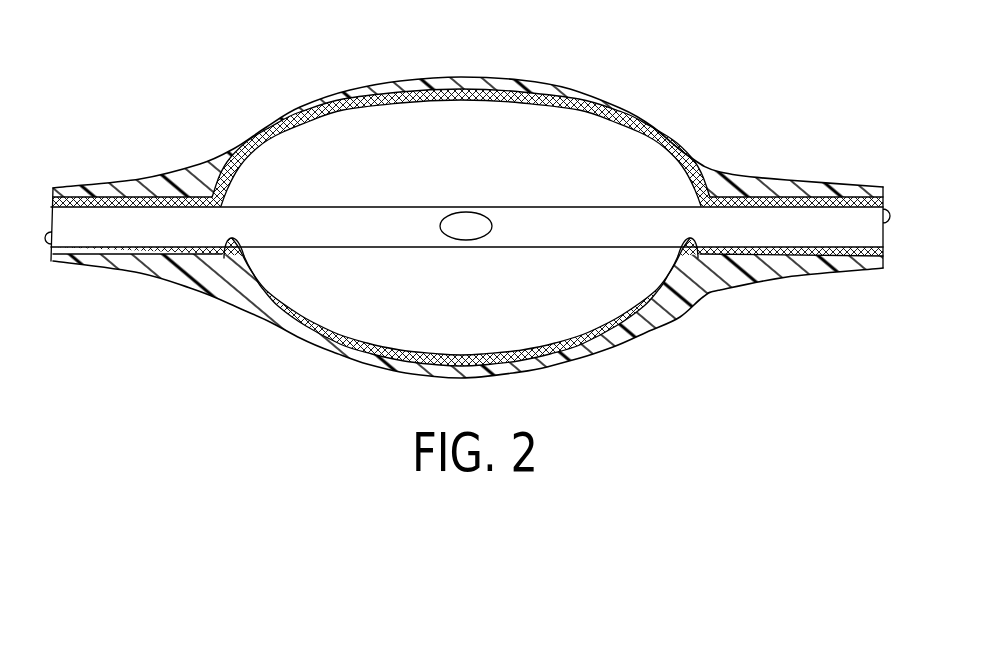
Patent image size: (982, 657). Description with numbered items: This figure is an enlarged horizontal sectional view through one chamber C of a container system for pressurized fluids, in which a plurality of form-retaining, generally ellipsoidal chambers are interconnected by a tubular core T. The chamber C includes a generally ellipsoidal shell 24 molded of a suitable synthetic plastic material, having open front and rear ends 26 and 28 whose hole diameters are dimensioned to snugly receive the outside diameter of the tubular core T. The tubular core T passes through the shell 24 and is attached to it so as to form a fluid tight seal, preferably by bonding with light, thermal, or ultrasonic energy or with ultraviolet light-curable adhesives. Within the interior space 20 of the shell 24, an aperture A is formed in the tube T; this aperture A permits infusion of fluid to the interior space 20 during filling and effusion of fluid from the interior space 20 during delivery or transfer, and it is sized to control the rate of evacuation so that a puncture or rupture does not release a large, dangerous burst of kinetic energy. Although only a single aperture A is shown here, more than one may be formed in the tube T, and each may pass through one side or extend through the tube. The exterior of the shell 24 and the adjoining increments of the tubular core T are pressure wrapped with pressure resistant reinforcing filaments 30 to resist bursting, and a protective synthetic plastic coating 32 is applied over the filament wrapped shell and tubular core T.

The interior space 20 is at (607, 185).
The shell 24 is at (568, 340).
The front end 26 is at (682, 242).
The rear end 28 is at (240, 240).
The reinforcing filaments 30 is at (347, 92).
The protective synthetic plastic coating 32 is at (273, 123).
The aperture A is at (462, 223).
The chamber C is at (600, 97).
The tubular core T is at (293, 225).